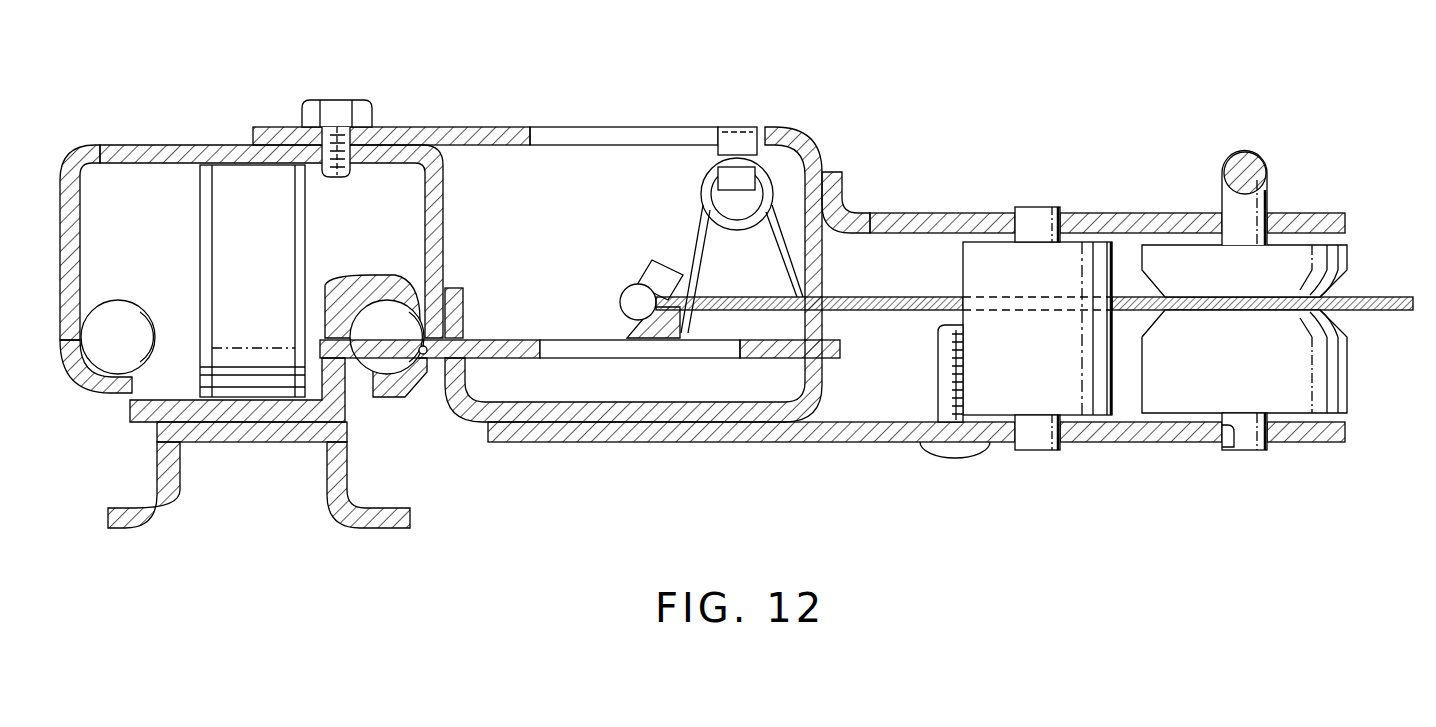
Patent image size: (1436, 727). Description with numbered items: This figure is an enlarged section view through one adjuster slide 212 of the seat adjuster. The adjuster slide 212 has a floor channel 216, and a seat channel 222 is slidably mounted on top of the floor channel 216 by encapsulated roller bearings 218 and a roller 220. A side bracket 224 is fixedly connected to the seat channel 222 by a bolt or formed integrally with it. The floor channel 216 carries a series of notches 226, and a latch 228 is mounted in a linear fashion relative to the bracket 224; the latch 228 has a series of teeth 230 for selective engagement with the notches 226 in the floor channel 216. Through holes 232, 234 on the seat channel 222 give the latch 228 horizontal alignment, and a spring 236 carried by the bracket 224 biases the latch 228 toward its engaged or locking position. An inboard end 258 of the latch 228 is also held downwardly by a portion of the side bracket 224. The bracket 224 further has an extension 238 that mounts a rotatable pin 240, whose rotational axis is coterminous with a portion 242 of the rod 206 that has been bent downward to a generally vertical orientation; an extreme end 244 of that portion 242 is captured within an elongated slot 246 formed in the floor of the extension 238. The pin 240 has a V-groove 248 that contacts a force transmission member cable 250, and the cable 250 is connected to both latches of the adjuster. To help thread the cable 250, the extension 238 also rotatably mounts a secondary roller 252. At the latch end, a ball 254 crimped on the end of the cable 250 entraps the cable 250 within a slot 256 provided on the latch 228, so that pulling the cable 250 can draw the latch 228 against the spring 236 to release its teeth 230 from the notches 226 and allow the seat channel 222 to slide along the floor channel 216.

The adjuster slide 212 is at (79, 138).
The seat channel 222 is at (165, 152).
The roller 220 is at (235, 237).
The encapsulated roller bearings 218 is at (135, 360).
The notches 226 is at (323, 335).
The latch 228 is at (535, 332).
The side bracket 224 is at (795, 122).
The spring 236 is at (702, 195).
The slot 256 is at (659, 281).
The ball 254 is at (626, 296).
The through hole 234 is at (487, 360).
The inboard end 258 is at (842, 350).
The teeth 230 is at (350, 386).
The floor channel 216 is at (325, 405).
The through hole 232 is at (430, 362).
The extension 238 is at (910, 215).
The secondary roller 252 is at (990, 262).
The portion of the rod 242 is at (1232, 205).
The rod 206 is at (1262, 158).
The V-groove 248 is at (1340, 287).
The cable 250 is at (1387, 309).
The pin 240 is at (1358, 395).
The elongated slot 246 is at (1232, 450).
The extreme end 244 is at (1248, 450).